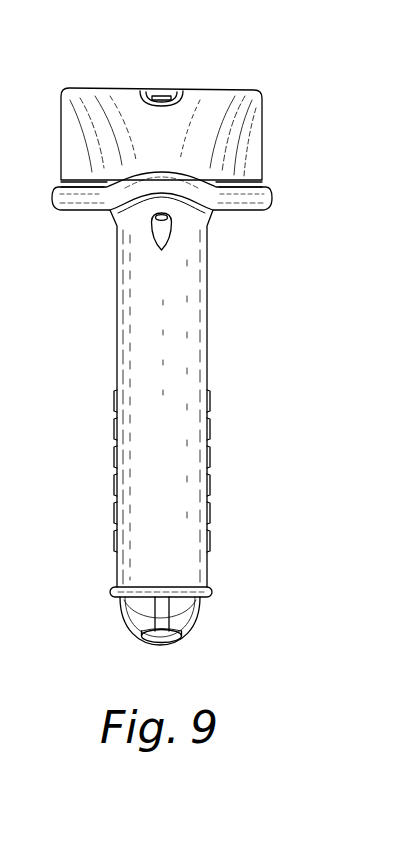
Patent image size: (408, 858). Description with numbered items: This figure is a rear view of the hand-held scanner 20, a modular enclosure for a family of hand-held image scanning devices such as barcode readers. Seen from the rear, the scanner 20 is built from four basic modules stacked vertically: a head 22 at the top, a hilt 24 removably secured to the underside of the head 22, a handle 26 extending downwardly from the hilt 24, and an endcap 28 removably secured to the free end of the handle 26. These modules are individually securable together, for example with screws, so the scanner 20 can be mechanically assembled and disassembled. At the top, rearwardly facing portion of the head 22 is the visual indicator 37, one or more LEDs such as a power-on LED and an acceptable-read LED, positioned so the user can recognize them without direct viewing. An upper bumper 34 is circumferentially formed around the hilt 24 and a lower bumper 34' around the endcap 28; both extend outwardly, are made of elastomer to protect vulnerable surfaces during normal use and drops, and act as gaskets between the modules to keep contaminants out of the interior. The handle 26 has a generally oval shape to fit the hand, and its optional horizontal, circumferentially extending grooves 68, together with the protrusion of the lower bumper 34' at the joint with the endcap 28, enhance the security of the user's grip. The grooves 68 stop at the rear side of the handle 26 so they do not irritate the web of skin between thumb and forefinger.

The hand-held scanner 20 is at (75, 458).
The head 22 is at (253, 143).
The hilt 24 is at (272, 197).
The handle 26 is at (195, 347).
The endcap 28 is at (202, 627).
The upper bumper 34 is at (118, 227).
The lower bumper 34' is at (196, 600).
The visual indicator 37 is at (165, 91).
The circumferentially extending grooves 68 is at (208, 443).